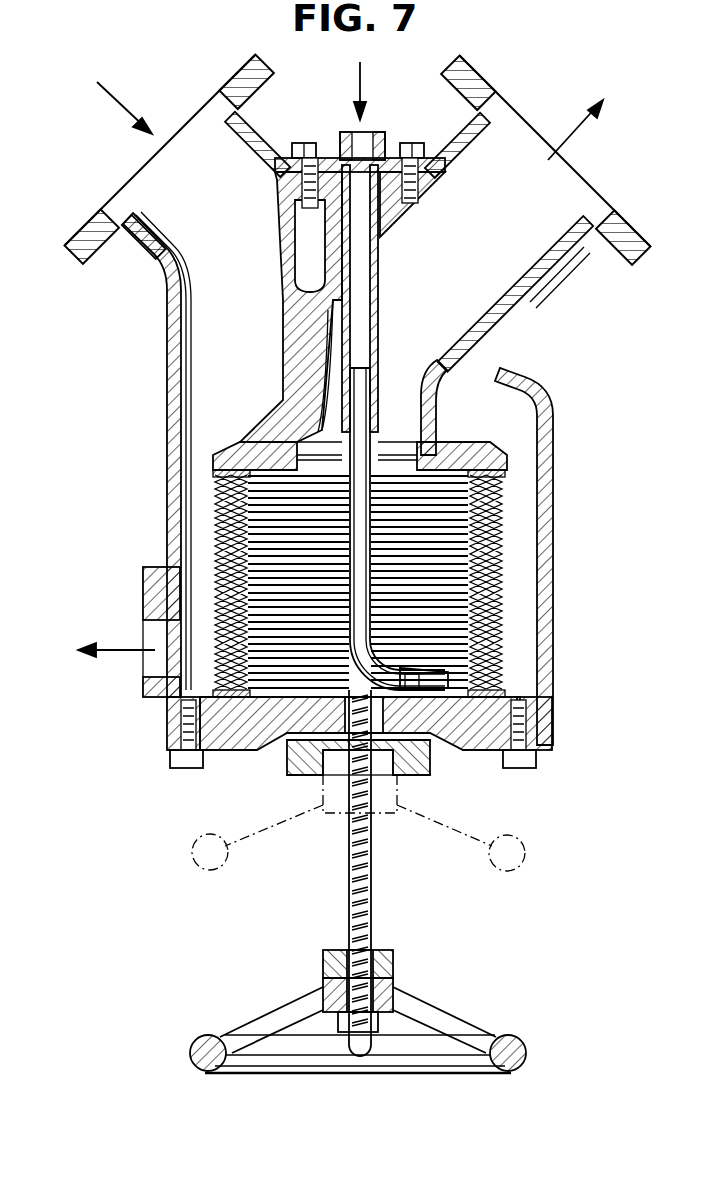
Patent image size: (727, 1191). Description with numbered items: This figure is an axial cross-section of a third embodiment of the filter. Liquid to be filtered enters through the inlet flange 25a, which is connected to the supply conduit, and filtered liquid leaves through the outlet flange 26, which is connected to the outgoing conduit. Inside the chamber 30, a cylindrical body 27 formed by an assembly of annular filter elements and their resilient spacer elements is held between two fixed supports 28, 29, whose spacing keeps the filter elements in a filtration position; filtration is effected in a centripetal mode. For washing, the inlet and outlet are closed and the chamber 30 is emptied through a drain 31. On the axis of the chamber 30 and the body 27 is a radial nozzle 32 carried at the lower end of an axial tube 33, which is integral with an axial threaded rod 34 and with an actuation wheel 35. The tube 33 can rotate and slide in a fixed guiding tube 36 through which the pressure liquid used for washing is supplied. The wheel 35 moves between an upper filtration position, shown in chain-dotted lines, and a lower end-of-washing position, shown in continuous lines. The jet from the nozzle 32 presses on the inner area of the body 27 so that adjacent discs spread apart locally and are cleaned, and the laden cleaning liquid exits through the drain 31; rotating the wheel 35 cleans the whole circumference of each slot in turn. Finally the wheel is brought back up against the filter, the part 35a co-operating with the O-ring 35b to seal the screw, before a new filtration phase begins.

The inlet flange 25a is at (222, 99).
The outlet flange 26 is at (490, 93).
The cylindrical body 27 is at (497, 533).
The fixed support 28 is at (470, 437).
The fixed support 29 is at (487, 710).
The chamber 30 is at (172, 500).
The drain 31 is at (160, 645).
The radial nozzle 32 is at (422, 682).
The axial tube 33 is at (378, 446).
The axial threaded rod 34 is at (372, 877).
The actuation wheel 35 is at (500, 1040).
The part 35a is at (322, 962).
The O-ring 35b is at (325, 762).
The fixed guiding tube 36 is at (378, 304).